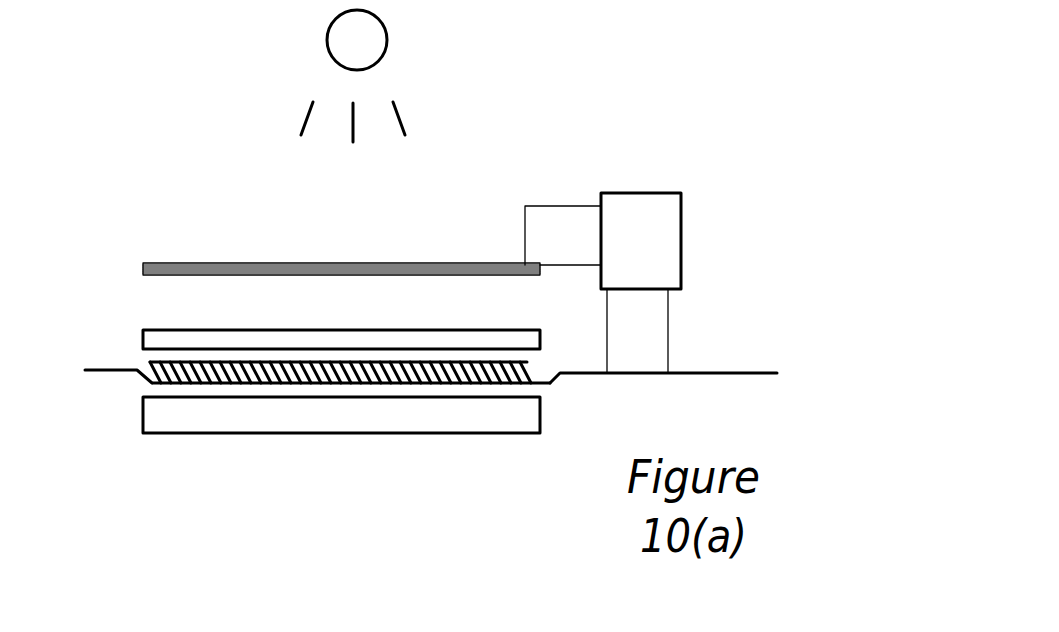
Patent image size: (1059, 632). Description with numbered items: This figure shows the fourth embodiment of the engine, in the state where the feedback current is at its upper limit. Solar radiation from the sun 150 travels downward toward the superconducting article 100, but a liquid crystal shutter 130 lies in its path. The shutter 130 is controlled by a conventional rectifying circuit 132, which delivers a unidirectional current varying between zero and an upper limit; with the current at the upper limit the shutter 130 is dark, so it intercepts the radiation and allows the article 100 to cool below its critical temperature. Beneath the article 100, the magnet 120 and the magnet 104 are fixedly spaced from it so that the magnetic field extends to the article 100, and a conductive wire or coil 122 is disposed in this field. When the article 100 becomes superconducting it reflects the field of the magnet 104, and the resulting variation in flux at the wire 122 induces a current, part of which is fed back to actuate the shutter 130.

The sun 150 is at (333, 40).
The liquid crystal shutter 130 is at (243, 263).
The rectifying circuit 132 is at (630, 203).
The superconducting article 100 is at (153, 340).
The conductive wire 122 is at (705, 372).
The second magnet 120 is at (245, 372).
The magnet 104 is at (440, 420).